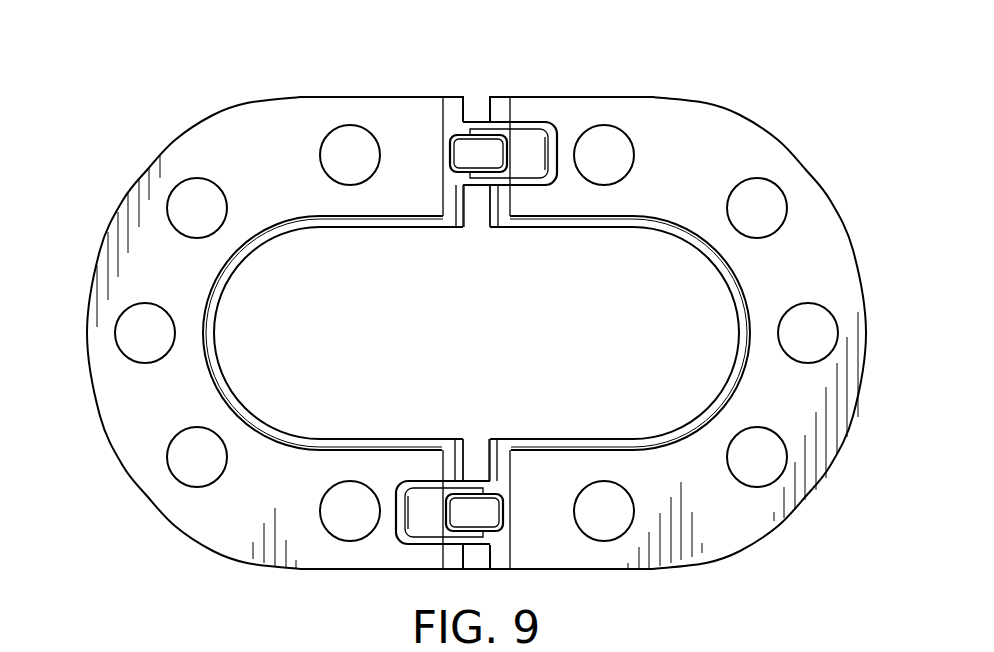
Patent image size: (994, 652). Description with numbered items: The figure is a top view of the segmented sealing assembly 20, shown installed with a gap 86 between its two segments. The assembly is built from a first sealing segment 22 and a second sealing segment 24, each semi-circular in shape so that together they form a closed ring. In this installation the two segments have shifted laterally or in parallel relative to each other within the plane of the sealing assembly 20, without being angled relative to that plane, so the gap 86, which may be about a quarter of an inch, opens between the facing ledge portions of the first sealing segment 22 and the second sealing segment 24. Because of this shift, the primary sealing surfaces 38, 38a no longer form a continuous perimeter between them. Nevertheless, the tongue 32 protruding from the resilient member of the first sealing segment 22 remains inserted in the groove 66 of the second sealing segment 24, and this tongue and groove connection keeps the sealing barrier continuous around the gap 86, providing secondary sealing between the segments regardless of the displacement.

The segmented sealing assembly 20 is at (150, 79).
The first sealing segment 22 is at (294, 129).
The second sealing segment 24 is at (672, 140).
The tongue 32 is at (468, 152).
The primary sealing surface 38 is at (213, 292).
The primary sealing surface 38a is at (727, 276).
The groove 66 is at (523, 130).
The gap 86 is at (478, 205).